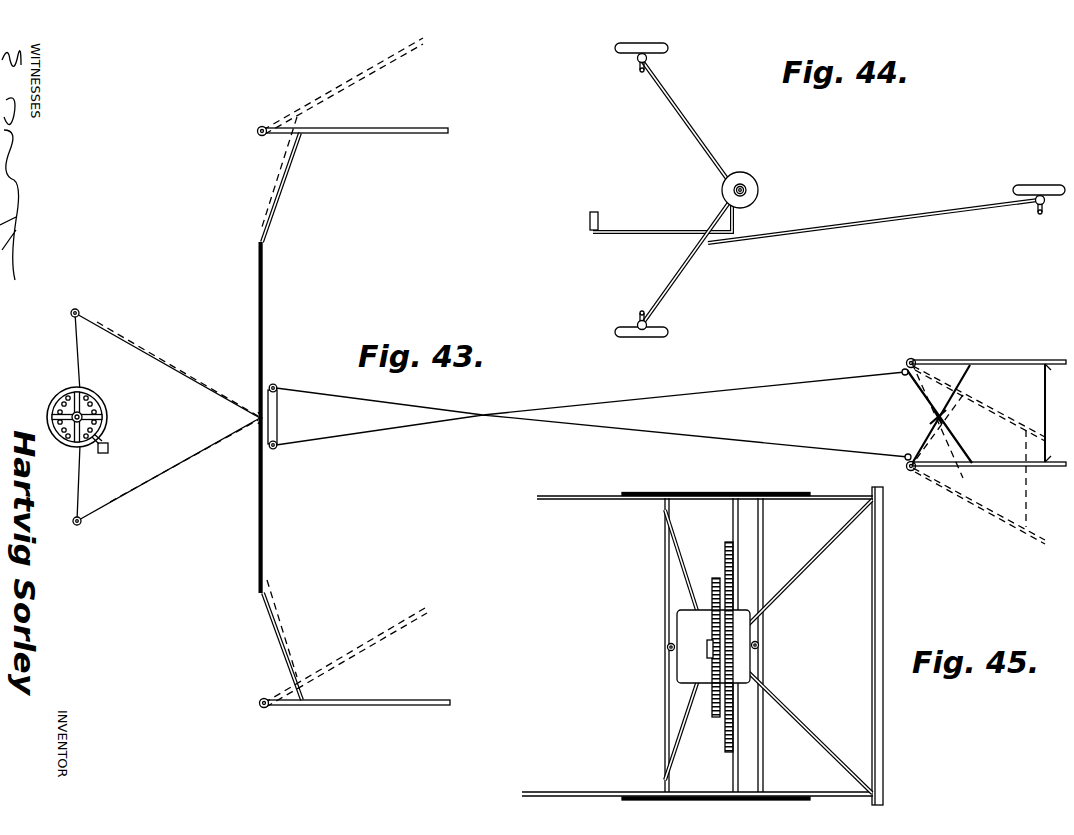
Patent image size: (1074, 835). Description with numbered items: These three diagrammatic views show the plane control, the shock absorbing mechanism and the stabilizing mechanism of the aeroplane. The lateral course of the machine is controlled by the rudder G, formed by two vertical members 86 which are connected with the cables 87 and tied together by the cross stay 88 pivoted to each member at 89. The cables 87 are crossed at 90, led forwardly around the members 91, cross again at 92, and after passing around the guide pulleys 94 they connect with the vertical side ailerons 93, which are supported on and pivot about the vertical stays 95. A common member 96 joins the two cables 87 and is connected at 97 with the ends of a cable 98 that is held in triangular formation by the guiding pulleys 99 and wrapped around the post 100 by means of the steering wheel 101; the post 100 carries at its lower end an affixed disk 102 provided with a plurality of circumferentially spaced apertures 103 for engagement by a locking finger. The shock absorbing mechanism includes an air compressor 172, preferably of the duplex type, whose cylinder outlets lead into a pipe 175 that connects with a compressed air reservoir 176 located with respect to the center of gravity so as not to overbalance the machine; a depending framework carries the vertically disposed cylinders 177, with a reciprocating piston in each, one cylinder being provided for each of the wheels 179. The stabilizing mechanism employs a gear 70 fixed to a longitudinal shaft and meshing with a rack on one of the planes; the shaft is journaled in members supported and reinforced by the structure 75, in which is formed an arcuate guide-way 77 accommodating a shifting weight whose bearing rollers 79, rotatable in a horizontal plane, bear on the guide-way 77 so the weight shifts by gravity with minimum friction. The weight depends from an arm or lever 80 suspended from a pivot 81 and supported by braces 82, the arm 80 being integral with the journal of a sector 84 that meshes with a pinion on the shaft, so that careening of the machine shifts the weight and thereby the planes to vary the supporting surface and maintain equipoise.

In FIG. 45, the gear 70 is at (727, 560).
In FIG. 45, the supporting and reinforcing structure 75 is at (832, 552).
In FIG. 45, the arcuate guide-way 77 is at (767, 670).
In FIG. 45, the bearing rollers 79 is at (667, 647).
In FIG. 45, the arm or lever 80 is at (681, 663).
In FIG. 45, the pivot 81 is at (710, 652).
In FIG. 45, the braces 82 is at (675, 553).
In FIG. 45, the sector 84 is at (713, 591).
In FIG. 43, the vertical members 86 is at (1012, 360).
In FIG. 43, the cables 87 is at (962, 376).
In FIG. 43, the cross stay 88 is at (1045, 378).
In FIG. 43, the pivot 89 is at (1050, 368).
In FIG. 43, the crossing of cables 90 is at (936, 417).
In FIG. 43, the members 91 is at (904, 375).
In FIG. 43, the second crossing of cables 92 is at (483, 417).
In FIG. 43, the vertical side ailerons 93 is at (381, 134).
In FIG. 43, the guide pulleys 94 is at (278, 389).
In FIG. 43, the vertical stays 95 is at (258, 131).
In FIG. 43, the common member 96 is at (264, 304).
In FIG. 43, the connection point 97 is at (258, 424).
In FIG. 43, the cable 98 is at (165, 362).
In FIG. 43, the guiding pulleys 99 is at (79, 311).
In FIG. 43, the post 100 is at (84, 402).
In FIG. 43, the steering wheel 101 is at (110, 428).
In FIG. 43, the disk 102 is at (92, 390).
In FIG. 43, the apertures 103 is at (101, 407).
In FIG. 44, the air compressor 172 is at (594, 212).
In FIG. 44, the pipe 175 is at (622, 238).
In FIG. 44, the compressed air reservoir 176 is at (748, 176).
In FIG. 44, the cylinders 177 is at (636, 60).
In FIG. 44, the wheels 179 is at (667, 50).
In FIG. 43, the rudder G is at (918, 402).